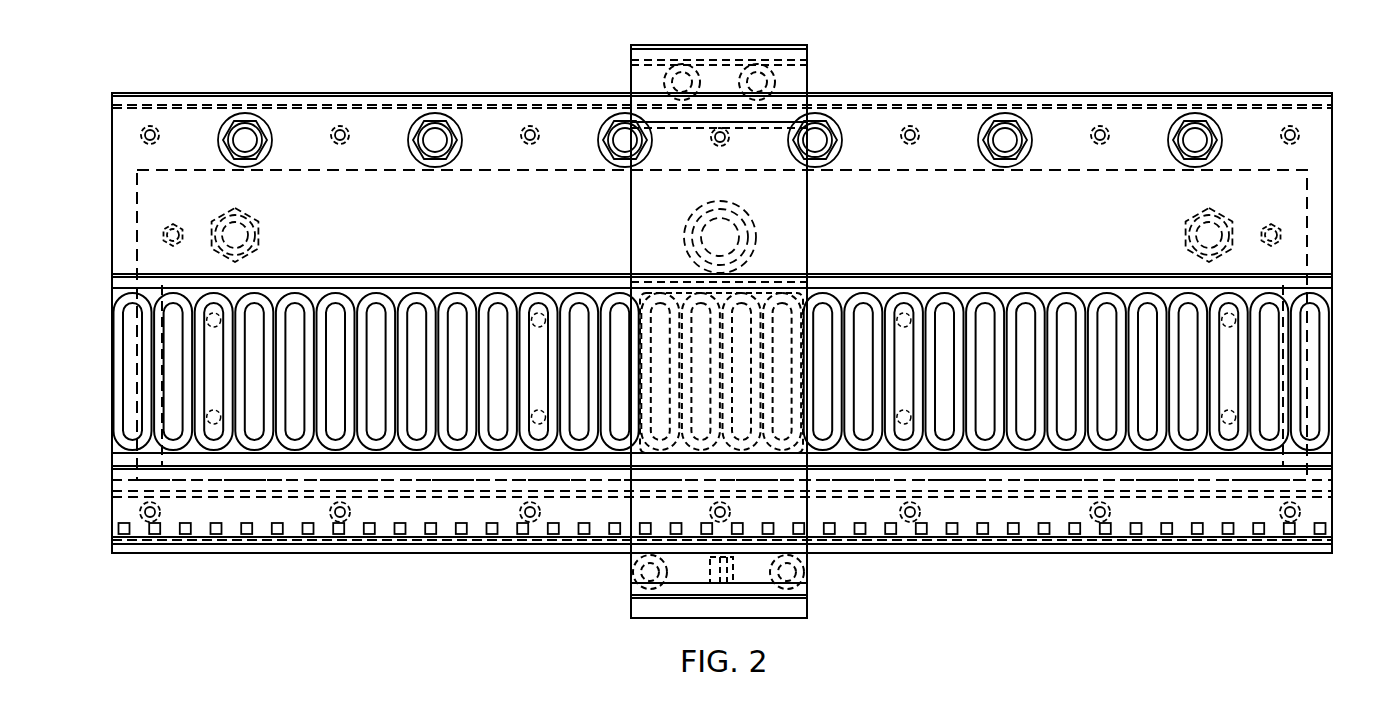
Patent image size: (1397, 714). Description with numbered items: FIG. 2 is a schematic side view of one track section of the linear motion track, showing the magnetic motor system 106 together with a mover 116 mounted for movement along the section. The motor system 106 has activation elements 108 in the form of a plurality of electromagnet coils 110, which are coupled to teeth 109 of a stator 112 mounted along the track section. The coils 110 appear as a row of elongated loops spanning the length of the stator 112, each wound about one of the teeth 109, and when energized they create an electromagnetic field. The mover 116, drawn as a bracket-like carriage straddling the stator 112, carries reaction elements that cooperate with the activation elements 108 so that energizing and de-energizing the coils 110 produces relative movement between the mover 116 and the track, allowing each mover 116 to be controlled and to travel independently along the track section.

The magnetic motor system 106 is at (1103, 66).
The activation elements 108 is at (112, 453).
The teeth 109 is at (130, 390).
The electromagnet coils 110 is at (120, 347).
The stator 112 is at (1343, 374).
The mover 116 is at (763, 45).